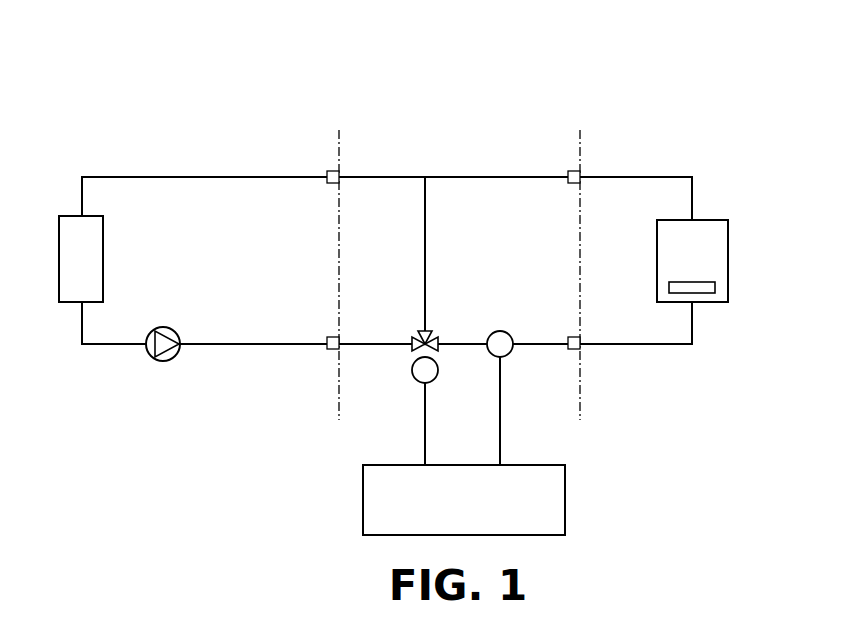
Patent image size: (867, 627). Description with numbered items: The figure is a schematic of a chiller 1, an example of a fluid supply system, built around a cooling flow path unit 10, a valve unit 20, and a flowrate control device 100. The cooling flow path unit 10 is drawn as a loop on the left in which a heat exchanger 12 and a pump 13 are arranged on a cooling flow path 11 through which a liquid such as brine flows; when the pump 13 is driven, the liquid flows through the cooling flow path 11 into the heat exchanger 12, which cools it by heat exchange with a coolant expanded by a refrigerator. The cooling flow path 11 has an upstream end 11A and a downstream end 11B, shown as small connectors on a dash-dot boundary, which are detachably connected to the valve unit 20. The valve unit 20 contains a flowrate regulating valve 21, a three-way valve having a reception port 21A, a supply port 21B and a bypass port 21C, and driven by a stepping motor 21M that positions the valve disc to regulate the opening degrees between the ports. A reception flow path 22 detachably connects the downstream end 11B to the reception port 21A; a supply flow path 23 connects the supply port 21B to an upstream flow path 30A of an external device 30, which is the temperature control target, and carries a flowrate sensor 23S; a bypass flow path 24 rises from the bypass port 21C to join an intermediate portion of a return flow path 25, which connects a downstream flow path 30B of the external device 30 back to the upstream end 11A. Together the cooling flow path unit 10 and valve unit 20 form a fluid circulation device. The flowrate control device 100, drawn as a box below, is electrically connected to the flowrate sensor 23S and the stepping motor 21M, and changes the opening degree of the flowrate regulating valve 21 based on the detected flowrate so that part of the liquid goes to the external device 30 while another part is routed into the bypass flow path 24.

The chiller 1 is at (76, 72).
The cooling flow path unit 10 is at (258, 145).
The cooling flow path 11 is at (163, 174).
The upstream end 11A is at (333, 170).
The downstream end 11B is at (331, 351).
The heat exchanger 12 is at (70, 215).
The pump 13 is at (170, 327).
The valve unit 20 is at (445, 168).
The flowrate regulating valve 21 is at (441, 327).
The reception port 21A is at (412, 340).
The supply port 21B is at (438, 351).
The bypass port 21C is at (428, 330).
The stepping motor 21M is at (411, 378).
The reception flow path 22 is at (350, 338).
The supply flow path 23 is at (532, 348).
The flowrate sensor 23S is at (509, 333).
The bypass flow path 24 is at (428, 200).
The return flow path 25 is at (525, 175).
The external device 30 is at (732, 211).
The upstream flow path 30A is at (668, 346).
The downstream flow path 30B is at (642, 175).
The flowrate control device 100 is at (566, 496).